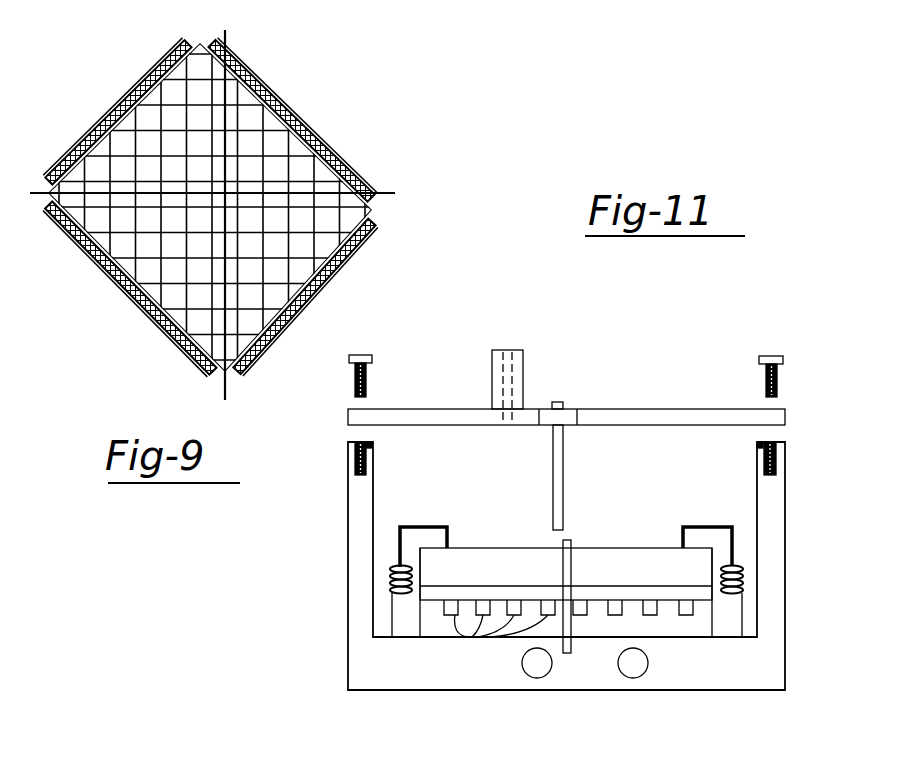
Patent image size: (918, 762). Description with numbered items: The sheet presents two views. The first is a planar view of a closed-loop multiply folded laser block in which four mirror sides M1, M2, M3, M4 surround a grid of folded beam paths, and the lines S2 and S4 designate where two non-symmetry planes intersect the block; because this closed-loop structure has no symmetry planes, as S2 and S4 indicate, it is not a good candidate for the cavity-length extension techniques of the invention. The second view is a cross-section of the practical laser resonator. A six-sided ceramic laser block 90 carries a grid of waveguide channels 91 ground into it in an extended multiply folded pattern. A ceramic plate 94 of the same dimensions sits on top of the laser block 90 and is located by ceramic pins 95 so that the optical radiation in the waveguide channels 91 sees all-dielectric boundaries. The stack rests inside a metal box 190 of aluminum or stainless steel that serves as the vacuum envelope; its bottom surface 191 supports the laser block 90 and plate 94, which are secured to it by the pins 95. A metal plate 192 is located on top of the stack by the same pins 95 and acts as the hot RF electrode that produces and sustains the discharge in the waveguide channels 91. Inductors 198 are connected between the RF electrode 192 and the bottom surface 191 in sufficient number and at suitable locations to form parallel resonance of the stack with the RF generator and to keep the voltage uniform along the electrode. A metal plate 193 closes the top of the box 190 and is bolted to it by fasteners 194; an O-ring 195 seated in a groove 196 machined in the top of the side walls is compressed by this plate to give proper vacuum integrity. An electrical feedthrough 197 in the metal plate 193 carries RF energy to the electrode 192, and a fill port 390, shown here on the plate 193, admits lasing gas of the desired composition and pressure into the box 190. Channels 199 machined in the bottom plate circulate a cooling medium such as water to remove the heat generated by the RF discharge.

In FIG. 9, the first magnet M1 is at (327, 145).
In FIG. 9, the second magnet M2 is at (318, 313).
In FIG. 9, the third magnet M3 is at (127, 303).
In FIG. 9, the fourth magnet M4 is at (107, 108).
In FIG. 9, the non-symmetry plane intersection S2 is at (224, 199).
In FIG. 9, the non-symmetry plane intersection S4 is at (225, 203).
In FIG. 11, the laser block 90 is at (683, 635).
In FIG. 11, the waveguide channels 91 is at (568, 633).
In FIG. 11, the plate 94 is at (642, 595).
In FIG. 11, the pins 95 is at (567, 545).
In FIG. 11, the metal box 190 is at (770, 533).
In FIG. 11, the bottom surface 191 is at (400, 642).
In FIG. 11, the metal plate 192 is at (473, 565).
In FIG. 11, the metal plate 193 is at (625, 410).
In FIG. 11, the fasteners 194 is at (367, 385).
In FIG. 11, the O-ring 195 is at (370, 442).
In FIG. 11, the groove 196 is at (375, 450).
In FIG. 11, the electrical feedthrough 197 is at (568, 420).
In FIG. 11, the inductors 198 is at (390, 585).
In FIG. 11, the channels 199 is at (617, 665).
In FIG. 11, the fill port 390 is at (510, 350).